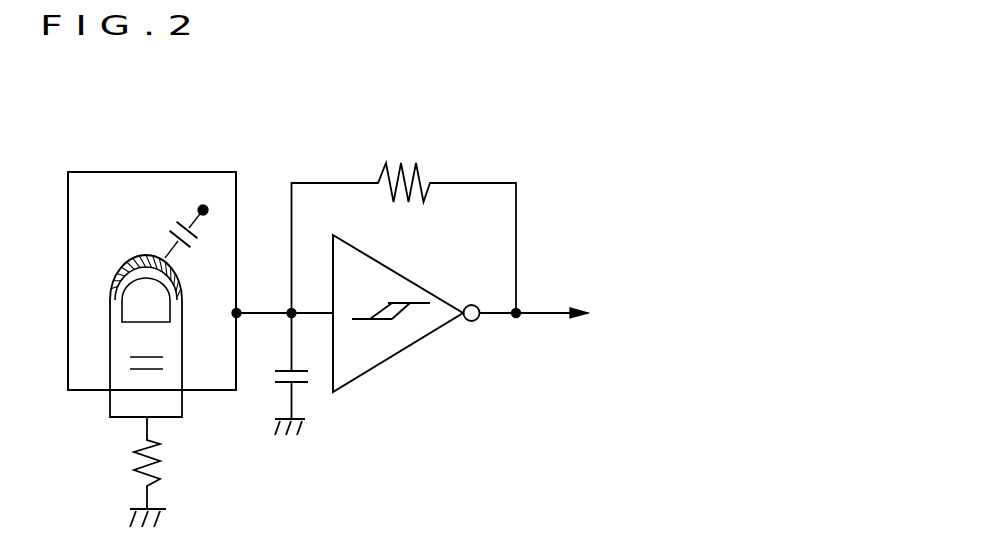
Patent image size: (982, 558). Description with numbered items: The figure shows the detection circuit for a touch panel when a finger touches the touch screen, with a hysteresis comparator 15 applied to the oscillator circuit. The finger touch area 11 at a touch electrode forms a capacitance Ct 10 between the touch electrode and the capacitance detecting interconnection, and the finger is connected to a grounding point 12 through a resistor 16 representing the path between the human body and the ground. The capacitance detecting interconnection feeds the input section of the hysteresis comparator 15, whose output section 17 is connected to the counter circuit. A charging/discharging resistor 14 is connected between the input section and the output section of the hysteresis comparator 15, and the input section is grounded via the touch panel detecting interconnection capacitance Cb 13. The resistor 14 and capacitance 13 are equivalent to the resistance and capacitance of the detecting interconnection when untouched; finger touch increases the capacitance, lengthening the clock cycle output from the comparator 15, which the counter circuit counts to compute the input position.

The capacitance Ct 10 is at (173, 229).
The finger touch area 11 is at (123, 263).
The grounding point 12 is at (129, 515).
The touch panel detecting interconnection capacitance Cb 13 is at (313, 378).
The charging/discharging resistor 14 is at (392, 168).
The hysteresis comparator 15 is at (405, 271).
The resistor 16 is at (140, 473).
The hysteresis comparator output section 17 is at (549, 311).